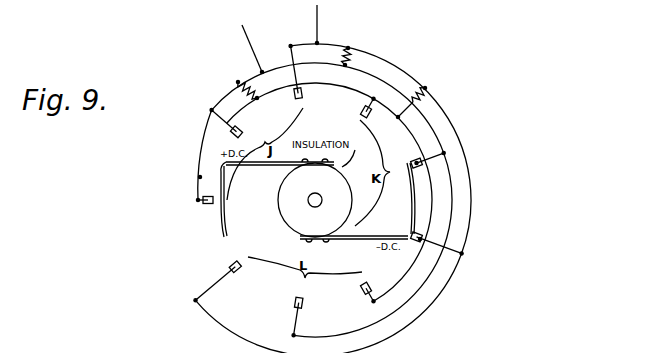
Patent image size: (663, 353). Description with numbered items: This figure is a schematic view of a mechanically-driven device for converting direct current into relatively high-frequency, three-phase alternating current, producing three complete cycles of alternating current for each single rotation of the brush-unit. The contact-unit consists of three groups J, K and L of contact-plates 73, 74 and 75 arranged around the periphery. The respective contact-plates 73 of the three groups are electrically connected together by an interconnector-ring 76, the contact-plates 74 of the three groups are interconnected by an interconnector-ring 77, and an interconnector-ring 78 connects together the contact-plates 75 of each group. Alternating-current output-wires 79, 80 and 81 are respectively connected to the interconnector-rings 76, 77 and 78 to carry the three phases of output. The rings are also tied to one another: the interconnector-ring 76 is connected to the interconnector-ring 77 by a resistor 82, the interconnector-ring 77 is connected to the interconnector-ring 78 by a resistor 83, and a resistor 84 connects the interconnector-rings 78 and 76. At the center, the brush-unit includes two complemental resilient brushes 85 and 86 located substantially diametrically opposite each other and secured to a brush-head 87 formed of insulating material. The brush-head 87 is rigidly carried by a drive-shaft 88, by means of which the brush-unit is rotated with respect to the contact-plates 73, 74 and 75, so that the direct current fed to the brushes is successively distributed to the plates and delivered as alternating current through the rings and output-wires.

The contact-plate 73 is at (362, 106).
The contact-plate 74 is at (241, 129).
The contact-plate 75 is at (303, 96).
The interconnector-ring 76 is at (205, 153).
The interconnector-ring 77 is at (228, 93).
The interconnector-ring 78 is at (395, 66).
The alternating-current output-wire 79 is at (200, 177).
The alternating-current output-wire 80 is at (241, 28).
The alternating-current output-wire 81 is at (317, 17).
The resistor 82 is at (243, 85).
The resistor 83 is at (351, 56).
The resistor 84 is at (430, 95).
The resilient brush 85 is at (229, 223).
The resilient brush 86 is at (409, 203).
The brush-head 87 is at (283, 221).
The drive-shaft 88 is at (309, 201).